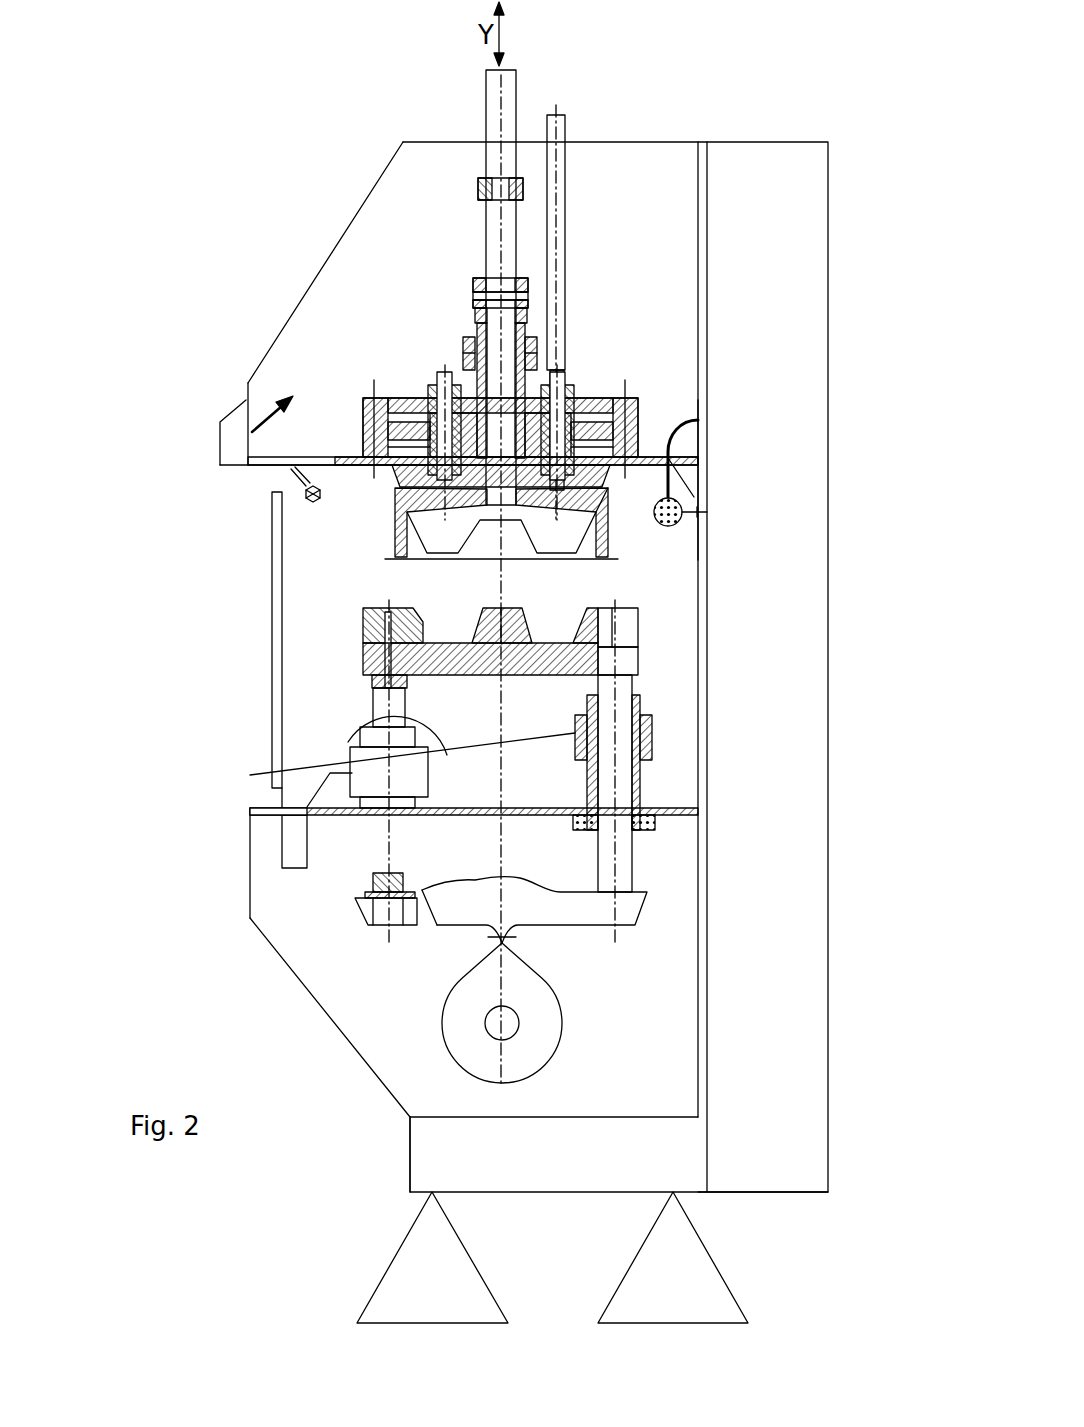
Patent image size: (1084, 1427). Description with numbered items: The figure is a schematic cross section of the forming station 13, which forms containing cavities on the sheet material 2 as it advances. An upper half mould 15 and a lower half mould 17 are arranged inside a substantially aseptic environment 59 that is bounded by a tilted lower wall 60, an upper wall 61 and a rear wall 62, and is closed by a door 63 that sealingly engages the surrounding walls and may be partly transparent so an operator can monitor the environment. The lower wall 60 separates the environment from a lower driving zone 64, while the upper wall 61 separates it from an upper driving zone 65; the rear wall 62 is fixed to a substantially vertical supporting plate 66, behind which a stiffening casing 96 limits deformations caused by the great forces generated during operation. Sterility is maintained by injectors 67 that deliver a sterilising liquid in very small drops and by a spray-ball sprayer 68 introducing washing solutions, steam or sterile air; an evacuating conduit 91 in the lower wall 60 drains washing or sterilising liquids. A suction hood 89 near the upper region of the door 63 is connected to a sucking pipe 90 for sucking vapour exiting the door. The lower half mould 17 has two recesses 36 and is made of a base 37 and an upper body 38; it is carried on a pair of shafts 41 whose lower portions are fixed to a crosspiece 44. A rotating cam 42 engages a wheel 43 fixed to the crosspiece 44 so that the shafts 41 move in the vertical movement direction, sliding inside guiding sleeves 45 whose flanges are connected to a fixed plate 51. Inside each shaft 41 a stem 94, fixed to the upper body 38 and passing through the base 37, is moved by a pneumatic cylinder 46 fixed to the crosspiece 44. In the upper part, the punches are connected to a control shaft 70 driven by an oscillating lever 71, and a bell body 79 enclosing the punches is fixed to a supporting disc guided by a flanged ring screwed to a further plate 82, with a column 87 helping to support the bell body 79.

The forming station 13 is at (286, 145).
The control shaft 70 is at (486, 232).
The lever 71 is at (478, 184).
The column 87 is at (566, 196).
The stiffening casing 96 is at (768, 243).
The upper driving zone 65 is at (658, 326).
The bell body 79 is at (615, 508).
The sprayer 68 is at (698, 422).
The supporting plate 66 is at (698, 478).
The substantially aseptic environment 59 is at (552, 583).
The rear wall 62 is at (708, 598).
The upper half mould 15 is at (444, 548).
The sheet material 2 is at (503, 560).
The recess 36 is at (421, 608).
The lower half mould 17 is at (362, 625).
The base 37 is at (640, 660).
The upper body 38 is at (640, 623).
The shafts 41 is at (373, 707).
The guiding sleeve 45 is at (640, 768).
The lower wall 60 is at (250, 775).
The plate 51 is at (683, 815).
The evacuating conduit 91 is at (285, 835).
The stem 94 is at (373, 882).
The pneumatic cylinder 46 is at (363, 912).
The wheel 43 is at (540, 943).
The crosspiece 44 is at (437, 920).
The cam 42 is at (565, 1040).
The lower driving zone 64 is at (645, 1005).
The plate 82 is at (343, 455).
The suction hood 89 is at (240, 437).
The sucking pipe 90 is at (270, 396).
The injector 67 is at (308, 494).
The upper wall 61 is at (343, 468).
The door 63 is at (272, 682).